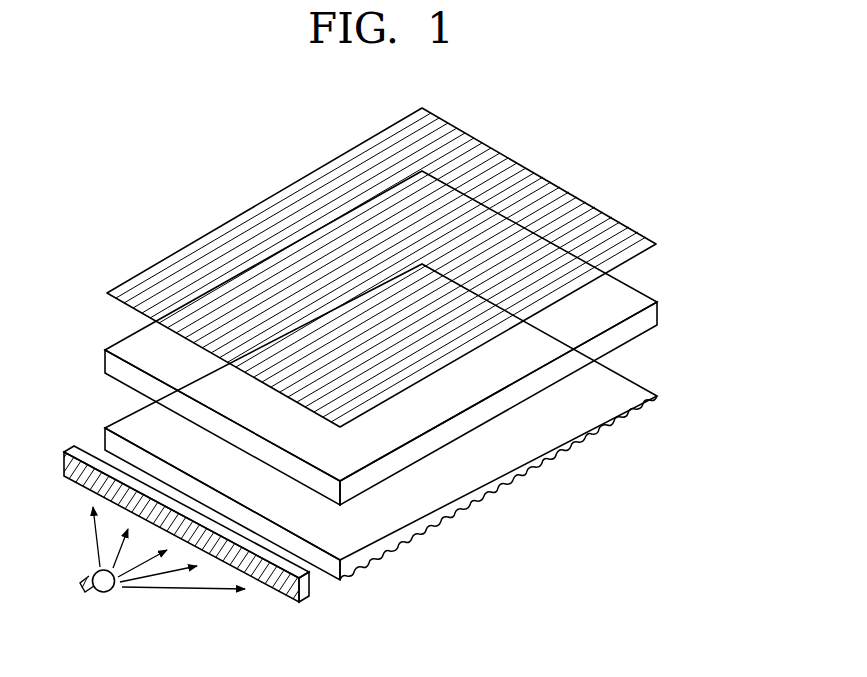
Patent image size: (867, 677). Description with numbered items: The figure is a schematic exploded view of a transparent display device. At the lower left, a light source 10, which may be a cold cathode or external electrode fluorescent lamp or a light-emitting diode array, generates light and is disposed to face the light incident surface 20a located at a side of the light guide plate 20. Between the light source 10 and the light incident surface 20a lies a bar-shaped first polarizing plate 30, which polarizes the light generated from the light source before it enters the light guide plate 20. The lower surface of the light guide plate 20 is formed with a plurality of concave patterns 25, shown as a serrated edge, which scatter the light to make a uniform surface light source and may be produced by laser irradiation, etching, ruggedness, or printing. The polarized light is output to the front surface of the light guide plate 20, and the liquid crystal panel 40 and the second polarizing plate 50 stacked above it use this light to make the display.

The light source 10 is at (110, 590).
The light guide plate 20 is at (406, 443).
The light incident surface 20a is at (340, 580).
The concave patterns 25 is at (450, 518).
The first polarizing plate 30 is at (307, 602).
The liquid crystal panel 40 is at (652, 315).
The second polarizing plate 50 is at (658, 244).